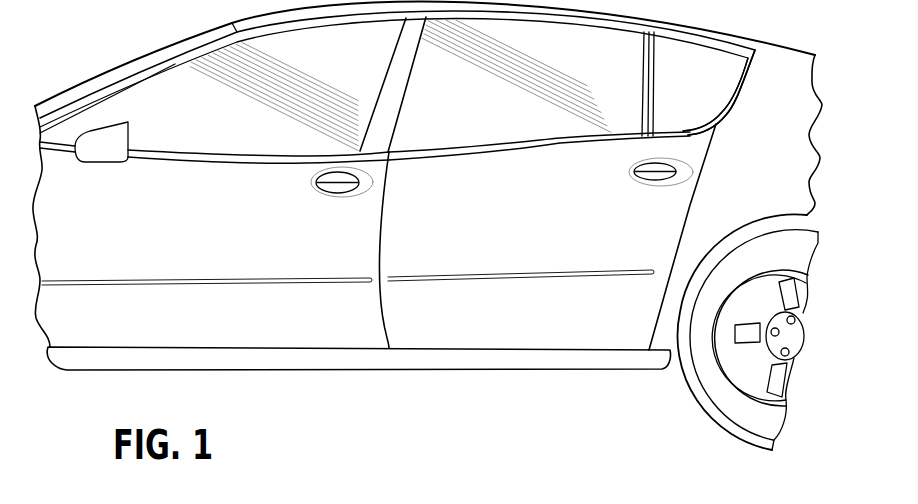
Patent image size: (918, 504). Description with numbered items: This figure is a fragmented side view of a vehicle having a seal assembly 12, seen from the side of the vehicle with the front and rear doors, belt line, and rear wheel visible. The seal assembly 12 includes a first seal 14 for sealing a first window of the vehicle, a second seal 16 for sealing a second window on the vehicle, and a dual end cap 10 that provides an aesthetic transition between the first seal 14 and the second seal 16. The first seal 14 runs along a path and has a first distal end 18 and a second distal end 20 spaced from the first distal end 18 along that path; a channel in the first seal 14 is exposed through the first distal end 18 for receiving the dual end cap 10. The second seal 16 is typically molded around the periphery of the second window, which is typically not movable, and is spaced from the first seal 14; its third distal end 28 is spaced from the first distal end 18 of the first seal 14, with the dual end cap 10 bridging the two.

The dual end cap 10 is at (645, 142).
The seal assembly 12 is at (579, 152).
The first seal 14 is at (528, 152).
The second seal 16 is at (688, 142).
The first distal end 18 is at (645, 137).
The second distal end 20 is at (389, 153).
The third distal end 28 is at (652, 137).